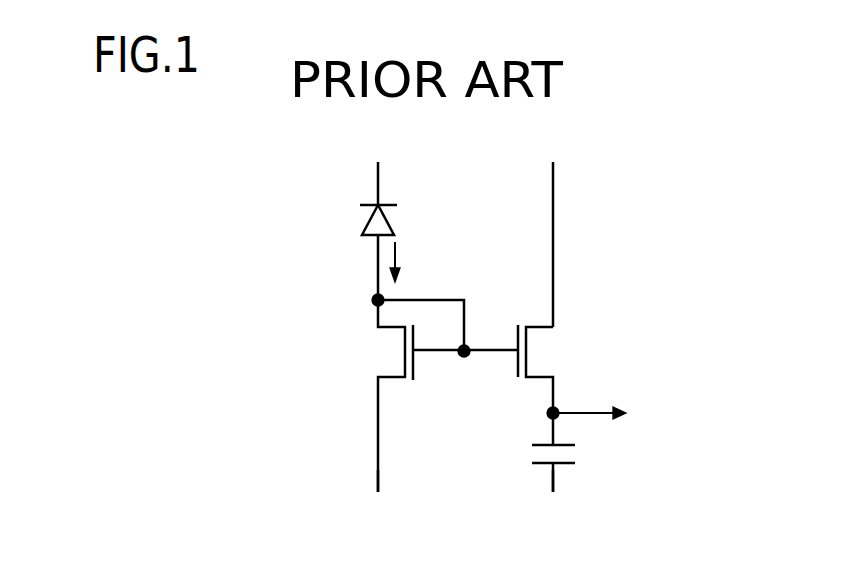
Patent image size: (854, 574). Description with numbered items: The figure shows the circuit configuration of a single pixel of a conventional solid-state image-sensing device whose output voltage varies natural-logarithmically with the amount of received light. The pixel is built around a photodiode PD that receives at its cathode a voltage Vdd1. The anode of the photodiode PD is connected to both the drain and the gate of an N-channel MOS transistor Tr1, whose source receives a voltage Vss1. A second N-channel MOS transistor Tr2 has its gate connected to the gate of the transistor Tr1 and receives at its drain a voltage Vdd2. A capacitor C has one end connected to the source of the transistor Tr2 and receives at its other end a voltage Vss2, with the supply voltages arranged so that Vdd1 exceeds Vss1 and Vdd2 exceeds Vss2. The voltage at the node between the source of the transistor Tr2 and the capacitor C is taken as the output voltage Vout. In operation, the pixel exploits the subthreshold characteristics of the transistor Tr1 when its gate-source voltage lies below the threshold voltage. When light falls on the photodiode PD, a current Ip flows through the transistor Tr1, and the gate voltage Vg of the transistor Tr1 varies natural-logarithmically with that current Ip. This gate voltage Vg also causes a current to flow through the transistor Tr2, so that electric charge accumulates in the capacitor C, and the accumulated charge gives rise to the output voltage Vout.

The photodiode PD is at (393, 223).
The N-channel MOS transistor Tr1 is at (392, 350).
The N-channel MOS transistor Tr2 is at (538, 351).
The capacitor C is at (566, 452).
The gate voltage Vg is at (486, 366).
The output voltage Vout is at (620, 413).
The current Ip is at (411, 262).
The voltage Vdd1 is at (391, 167).
The voltage Vdd2 is at (565, 228).
The voltage Vss1 is at (389, 499).
The voltage Vss2 is at (565, 499).